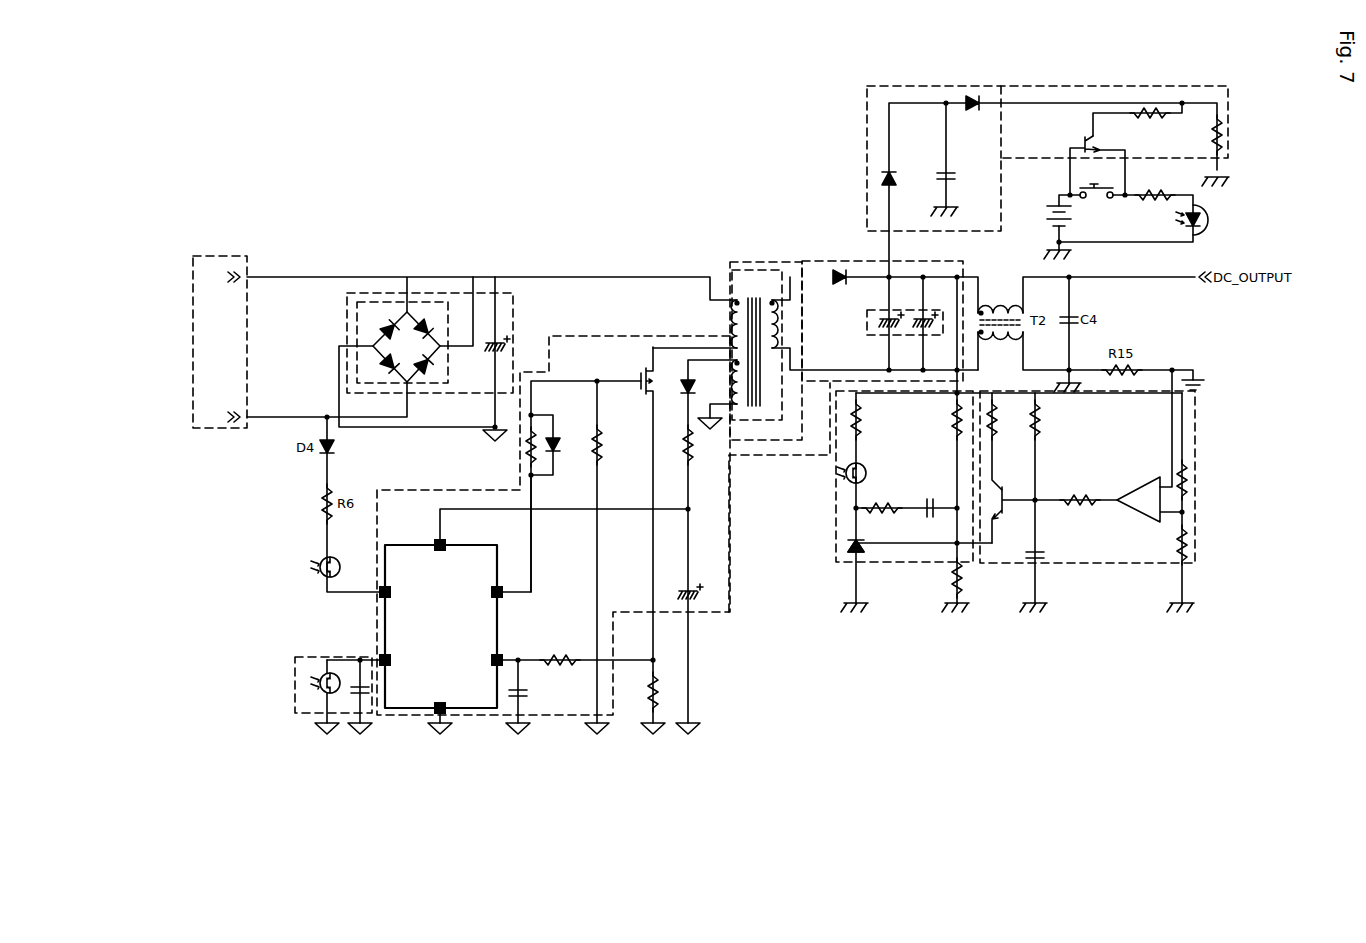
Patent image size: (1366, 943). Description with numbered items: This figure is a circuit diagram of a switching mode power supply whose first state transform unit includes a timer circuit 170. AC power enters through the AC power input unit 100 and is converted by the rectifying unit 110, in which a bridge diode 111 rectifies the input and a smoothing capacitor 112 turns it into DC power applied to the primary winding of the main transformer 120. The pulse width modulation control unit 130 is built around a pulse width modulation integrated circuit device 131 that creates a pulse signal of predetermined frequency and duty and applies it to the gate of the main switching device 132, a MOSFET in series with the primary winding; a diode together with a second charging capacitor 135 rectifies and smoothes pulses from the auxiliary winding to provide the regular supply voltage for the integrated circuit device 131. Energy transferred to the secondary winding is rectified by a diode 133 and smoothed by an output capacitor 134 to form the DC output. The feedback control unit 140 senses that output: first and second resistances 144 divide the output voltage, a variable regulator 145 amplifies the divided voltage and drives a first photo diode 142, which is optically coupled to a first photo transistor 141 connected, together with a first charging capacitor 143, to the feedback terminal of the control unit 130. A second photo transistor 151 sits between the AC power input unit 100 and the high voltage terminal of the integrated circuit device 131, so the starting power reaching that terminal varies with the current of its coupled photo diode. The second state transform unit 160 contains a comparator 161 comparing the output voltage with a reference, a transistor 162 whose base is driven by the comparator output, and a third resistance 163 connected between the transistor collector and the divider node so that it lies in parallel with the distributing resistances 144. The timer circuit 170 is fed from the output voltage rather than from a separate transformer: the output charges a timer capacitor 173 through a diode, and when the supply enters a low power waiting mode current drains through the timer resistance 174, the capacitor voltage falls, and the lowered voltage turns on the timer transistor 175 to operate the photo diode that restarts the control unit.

The AC power input unit 100 is at (230, 255).
The rectifying unit 110 is at (437, 292).
The bridge diode 111 is at (388, 300).
The smoothing capacitor 112 is at (490, 340).
The main transformer 120 is at (742, 270).
The pulse width modulation control unit 130 is at (417, 488).
The pulse width modulation integrated circuit device 131 is at (440, 540).
The main switching device 132 is at (648, 354).
The diode 133 is at (838, 270).
The output capacitor 134 is at (868, 276).
The second charging capacitor 135 is at (690, 600).
The feedback control unit 140 is at (345, 715).
The first photo transistor 141 is at (305, 690).
The first photo diode 142 is at (838, 480).
The first charging capacitor 143 is at (357, 688).
The first and second resistances 144 is at (954, 430).
The variable regulator 145 is at (860, 540).
The second photo transistor 151 is at (300, 578).
The second state transform unit 160 is at (1140, 563).
The comparator 161 is at (1140, 505).
The transistor 162 is at (1000, 525).
The third resistance 163 is at (993, 410).
The timer circuit 170 is at (866, 157).
The timer capacitor 173 is at (937, 170).
The timer resistance 174 is at (1222, 148).
The timer transistor 175 is at (1083, 142).